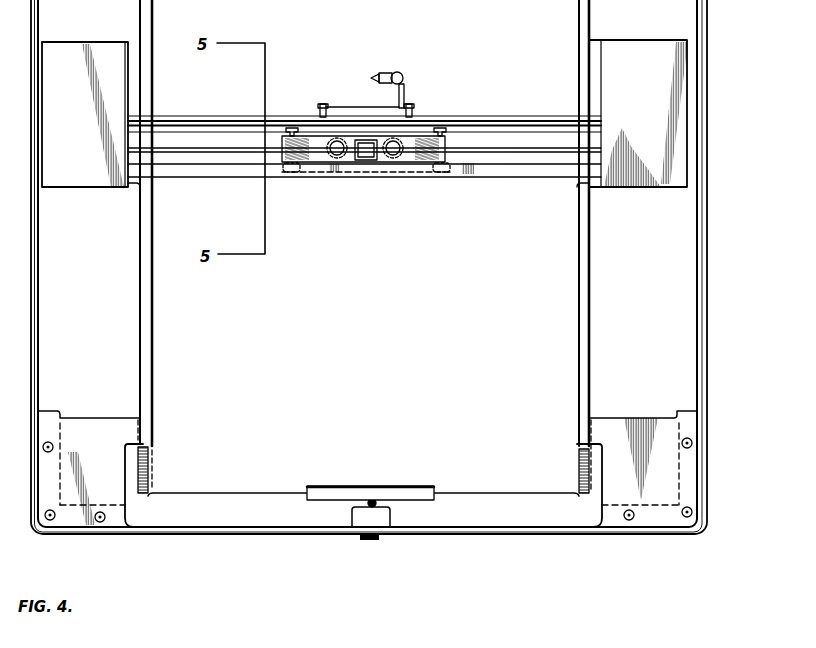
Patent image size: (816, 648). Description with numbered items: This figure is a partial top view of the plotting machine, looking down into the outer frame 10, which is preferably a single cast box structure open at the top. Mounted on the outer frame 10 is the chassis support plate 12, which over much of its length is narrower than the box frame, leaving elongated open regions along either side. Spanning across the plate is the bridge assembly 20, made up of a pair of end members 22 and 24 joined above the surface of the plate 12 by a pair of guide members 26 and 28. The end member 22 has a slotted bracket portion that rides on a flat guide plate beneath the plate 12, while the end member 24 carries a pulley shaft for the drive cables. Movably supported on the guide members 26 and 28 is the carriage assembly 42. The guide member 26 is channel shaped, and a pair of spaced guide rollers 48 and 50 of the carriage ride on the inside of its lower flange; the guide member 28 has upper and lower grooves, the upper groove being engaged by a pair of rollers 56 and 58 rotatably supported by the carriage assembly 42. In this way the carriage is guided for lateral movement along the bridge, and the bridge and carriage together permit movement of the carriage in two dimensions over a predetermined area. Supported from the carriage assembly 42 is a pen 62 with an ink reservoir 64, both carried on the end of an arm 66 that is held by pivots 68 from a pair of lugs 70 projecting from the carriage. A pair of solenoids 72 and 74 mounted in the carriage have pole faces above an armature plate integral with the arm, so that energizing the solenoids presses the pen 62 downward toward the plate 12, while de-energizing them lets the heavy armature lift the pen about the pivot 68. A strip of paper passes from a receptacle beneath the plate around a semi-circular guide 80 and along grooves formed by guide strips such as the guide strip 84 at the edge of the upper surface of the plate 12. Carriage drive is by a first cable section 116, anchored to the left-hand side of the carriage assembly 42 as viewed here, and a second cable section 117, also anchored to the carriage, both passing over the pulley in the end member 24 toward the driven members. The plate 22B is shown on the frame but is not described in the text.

The outer frame 10 is at (704, 220).
The chassis support plate 12 is at (110, 493).
The bridge assembly 20 is at (473, 116).
The end member 22 is at (642, 40).
The plate 22B is at (327, 486).
The end member 24 is at (90, 42).
The guide member 26 is at (480, 170).
The guide member 28 is at (497, 126).
The carriage assembly 42 is at (419, 150).
The guide roller 48 is at (288, 181).
The guide roller 50 is at (445, 173).
The roller 56 is at (290, 130).
The roller 58 is at (438, 126).
The pen 62 is at (373, 77).
The ink reservoir 64 is at (397, 74).
The arm 66 is at (404, 100).
The pivot 68 is at (332, 105).
The lug 70 is at (319, 112).
The solenoid 72 is at (329, 151).
The solenoid 74 is at (389, 154).
The semi-circular guide 80 is at (594, 489).
The guide strip 84 is at (155, 329).
The first cable section 116 is at (182, 147).
The second cable section 117 is at (172, 153).